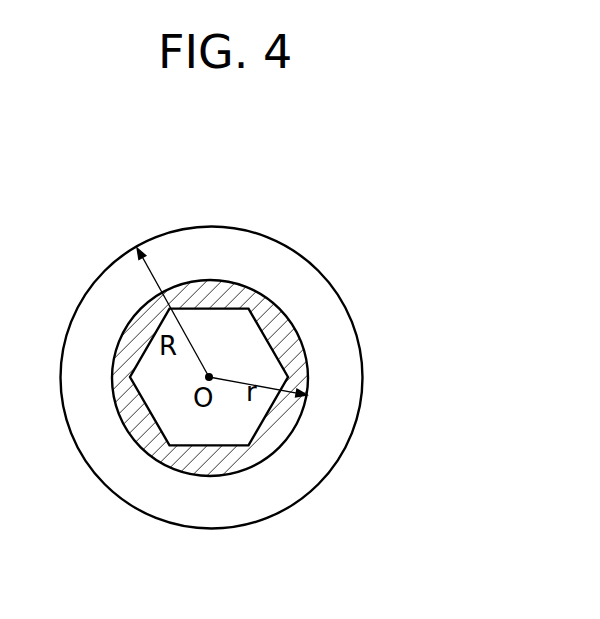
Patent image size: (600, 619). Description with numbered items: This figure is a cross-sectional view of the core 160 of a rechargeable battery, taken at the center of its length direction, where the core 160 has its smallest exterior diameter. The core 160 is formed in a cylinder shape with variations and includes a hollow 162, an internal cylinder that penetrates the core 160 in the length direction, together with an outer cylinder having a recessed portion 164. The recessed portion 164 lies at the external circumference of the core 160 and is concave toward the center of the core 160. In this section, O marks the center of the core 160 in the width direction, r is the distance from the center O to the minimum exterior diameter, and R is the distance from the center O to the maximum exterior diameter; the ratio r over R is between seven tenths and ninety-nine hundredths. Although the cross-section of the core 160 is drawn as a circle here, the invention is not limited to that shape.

The core 160 is at (324, 228).
The hollow 162 is at (238, 425).
The recessed portion 164 is at (287, 338).